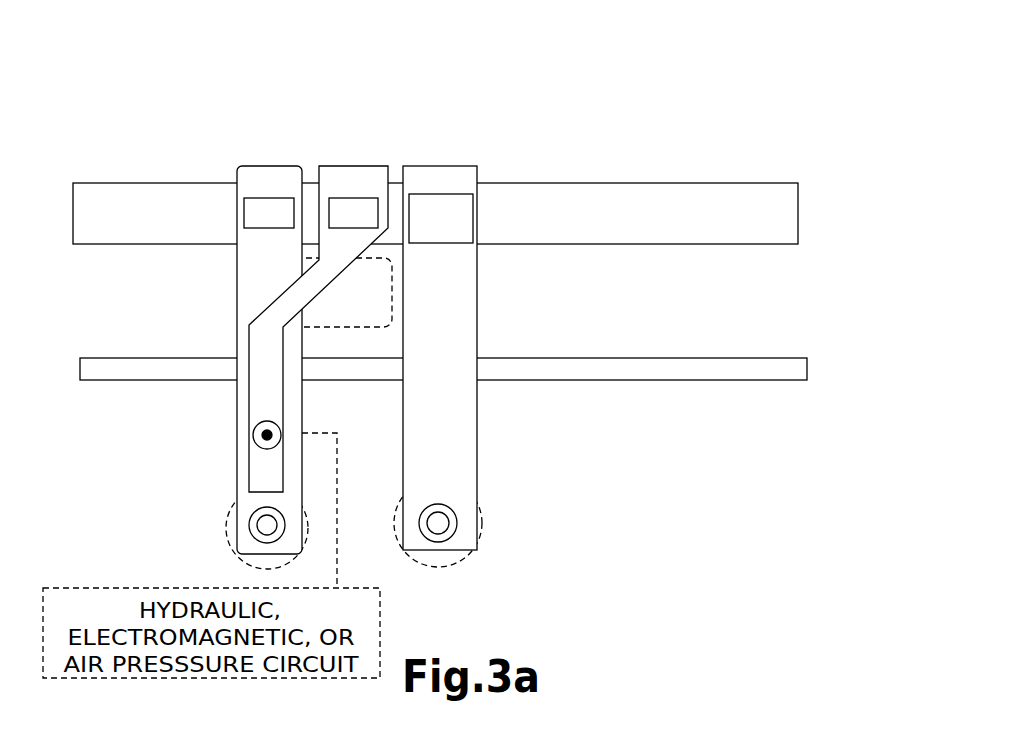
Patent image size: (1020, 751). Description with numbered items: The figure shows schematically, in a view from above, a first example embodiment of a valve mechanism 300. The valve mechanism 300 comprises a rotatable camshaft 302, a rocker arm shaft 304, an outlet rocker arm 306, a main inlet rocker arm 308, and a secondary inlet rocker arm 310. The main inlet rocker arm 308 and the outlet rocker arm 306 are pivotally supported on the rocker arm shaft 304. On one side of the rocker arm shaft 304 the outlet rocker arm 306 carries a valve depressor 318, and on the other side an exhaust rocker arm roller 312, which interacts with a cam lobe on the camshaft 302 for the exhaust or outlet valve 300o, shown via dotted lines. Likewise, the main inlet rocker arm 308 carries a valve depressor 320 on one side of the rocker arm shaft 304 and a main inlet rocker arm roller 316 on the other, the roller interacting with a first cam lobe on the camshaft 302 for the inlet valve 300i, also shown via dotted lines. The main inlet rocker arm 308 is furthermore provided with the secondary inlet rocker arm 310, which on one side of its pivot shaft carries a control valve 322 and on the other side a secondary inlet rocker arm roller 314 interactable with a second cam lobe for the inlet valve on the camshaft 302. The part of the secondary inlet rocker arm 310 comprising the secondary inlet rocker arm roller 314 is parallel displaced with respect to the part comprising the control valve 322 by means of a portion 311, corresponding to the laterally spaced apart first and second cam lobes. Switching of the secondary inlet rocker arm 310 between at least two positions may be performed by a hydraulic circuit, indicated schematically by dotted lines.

The valve mechanism 300 is at (134, 68).
The camshaft 302 is at (777, 213).
The rocker arm shaft 304 is at (797, 370).
The outlet rocker arm 306 is at (465, 328).
The main inlet rocker arm 308 is at (237, 297).
The secondary inlet rocker arm 310 is at (308, 285).
The portion 311 is at (393, 292).
The exhaust rocker arm roller 312 is at (458, 208).
The secondary inlet rocker arm roller 314 is at (345, 213).
The main inlet rocker arm roller 316 is at (265, 212).
The valve depressor 318 is at (440, 525).
The valve depressor 320 is at (263, 527).
The control valve 322 is at (260, 433).
The inlet valve 300i is at (230, 507).
The outlet valve 300o is at (458, 557).